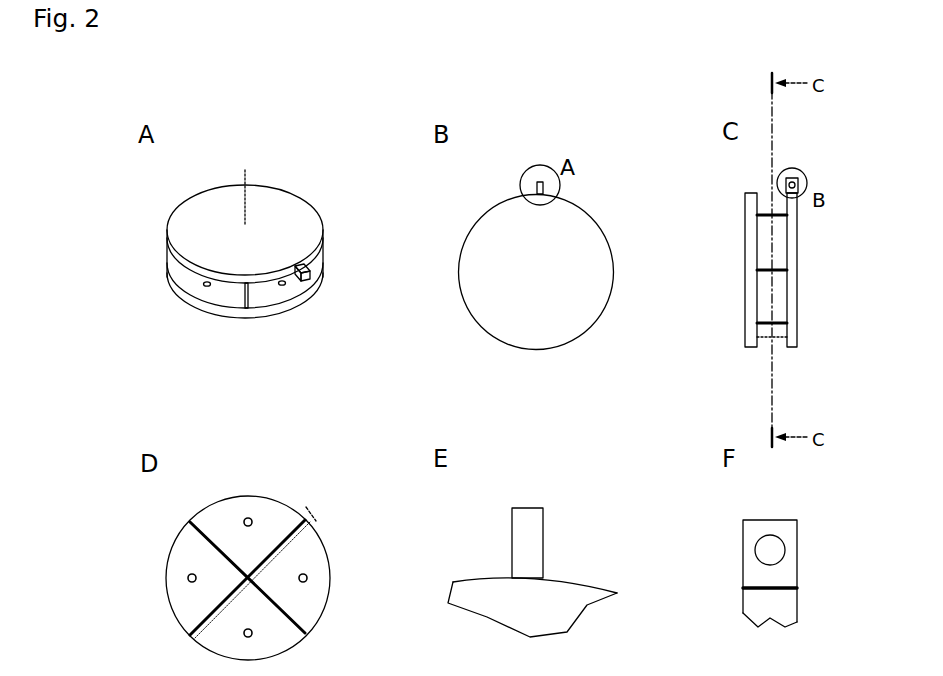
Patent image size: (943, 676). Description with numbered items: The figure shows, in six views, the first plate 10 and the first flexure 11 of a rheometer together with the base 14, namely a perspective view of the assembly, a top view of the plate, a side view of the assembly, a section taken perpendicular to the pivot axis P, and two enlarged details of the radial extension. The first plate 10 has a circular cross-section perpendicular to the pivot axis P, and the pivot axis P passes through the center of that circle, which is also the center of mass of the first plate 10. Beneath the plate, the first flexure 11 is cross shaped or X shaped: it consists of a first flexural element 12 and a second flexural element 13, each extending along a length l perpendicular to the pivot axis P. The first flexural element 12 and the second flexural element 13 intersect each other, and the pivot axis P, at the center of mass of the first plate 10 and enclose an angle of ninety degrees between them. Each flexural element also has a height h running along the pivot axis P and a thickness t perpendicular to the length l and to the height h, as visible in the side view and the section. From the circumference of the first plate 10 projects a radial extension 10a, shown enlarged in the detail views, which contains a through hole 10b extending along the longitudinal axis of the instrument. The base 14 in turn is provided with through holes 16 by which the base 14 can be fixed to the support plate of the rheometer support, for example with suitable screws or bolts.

The first plate 10 is at (283, 211).
The radial extension 10a is at (311, 272).
The through hole 10b is at (768, 547).
The first flexure 11 is at (155, 255).
The first flexural element 12 is at (244, 296).
The second flexural element 13 is at (320, 262).
The base 14 is at (277, 312).
The through holes 16 is at (245, 517).
The pivot axis P is at (242, 188).
The height h is at (764, 340).
The thickness t is at (318, 515).
The length l is at (298, 537).